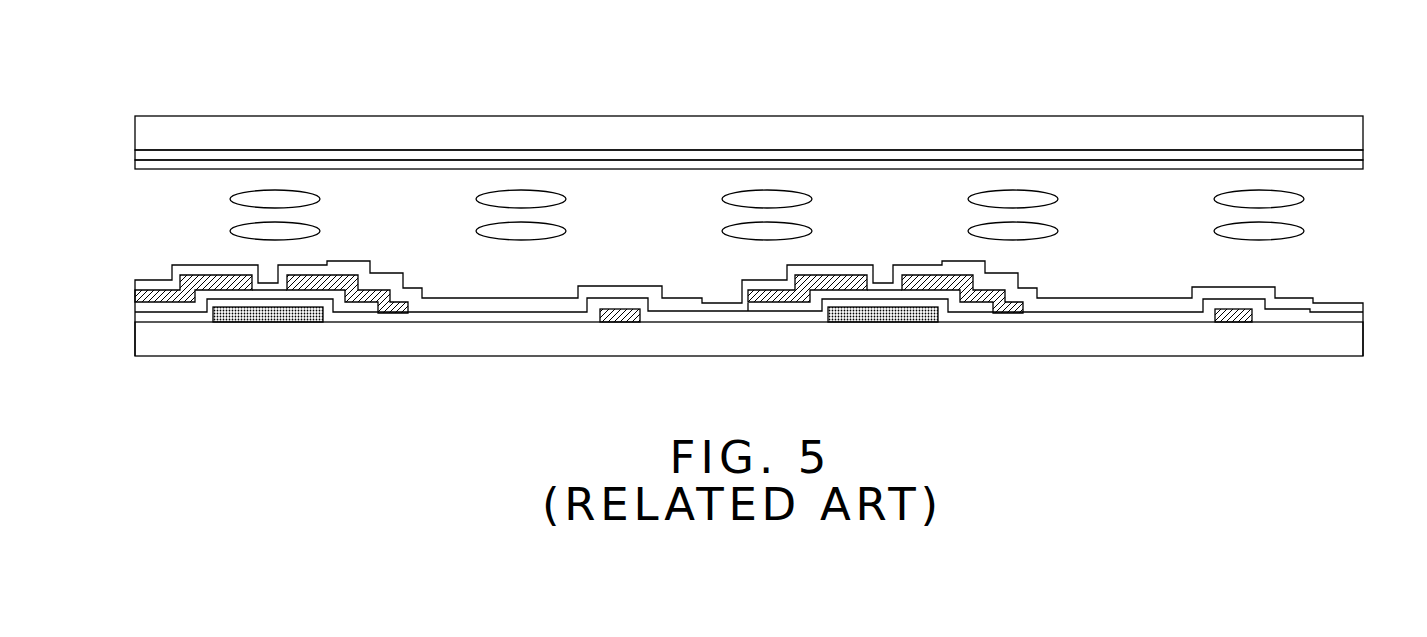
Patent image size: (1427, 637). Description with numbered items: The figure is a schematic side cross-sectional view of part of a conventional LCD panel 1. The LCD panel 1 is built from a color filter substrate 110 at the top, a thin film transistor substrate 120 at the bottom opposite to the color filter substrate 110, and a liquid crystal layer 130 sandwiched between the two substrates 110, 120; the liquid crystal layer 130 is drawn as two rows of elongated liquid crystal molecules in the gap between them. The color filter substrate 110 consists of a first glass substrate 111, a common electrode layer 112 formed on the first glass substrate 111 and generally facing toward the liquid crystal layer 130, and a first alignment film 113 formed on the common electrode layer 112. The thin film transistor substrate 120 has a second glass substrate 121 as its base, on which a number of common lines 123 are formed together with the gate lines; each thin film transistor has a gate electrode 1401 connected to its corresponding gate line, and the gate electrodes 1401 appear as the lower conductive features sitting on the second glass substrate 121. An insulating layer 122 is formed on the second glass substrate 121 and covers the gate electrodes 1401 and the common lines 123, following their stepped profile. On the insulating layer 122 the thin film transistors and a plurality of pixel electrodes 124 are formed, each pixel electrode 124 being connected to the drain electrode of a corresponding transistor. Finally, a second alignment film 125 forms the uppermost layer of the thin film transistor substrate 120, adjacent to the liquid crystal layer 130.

The LCD panel 1 is at (911, 41).
The color filter substrate 110 is at (724, 139).
The first glass substrate 111 is at (1303, 135).
The common electrode layer 112 is at (1252, 157).
The first alignment film 113 is at (1343, 163).
The liquid crystal layer 130 is at (223, 190).
The thin film transistor substrate 120 is at (730, 337).
The second glass substrate 121 is at (1095, 333).
The insulating layer 122 is at (1285, 317).
The common lines 123 is at (620, 323).
The gate electrode 1401 is at (905, 323).
The pixel electrodes 124 is at (1256, 298).
The second alignment film 125 is at (1298, 302).